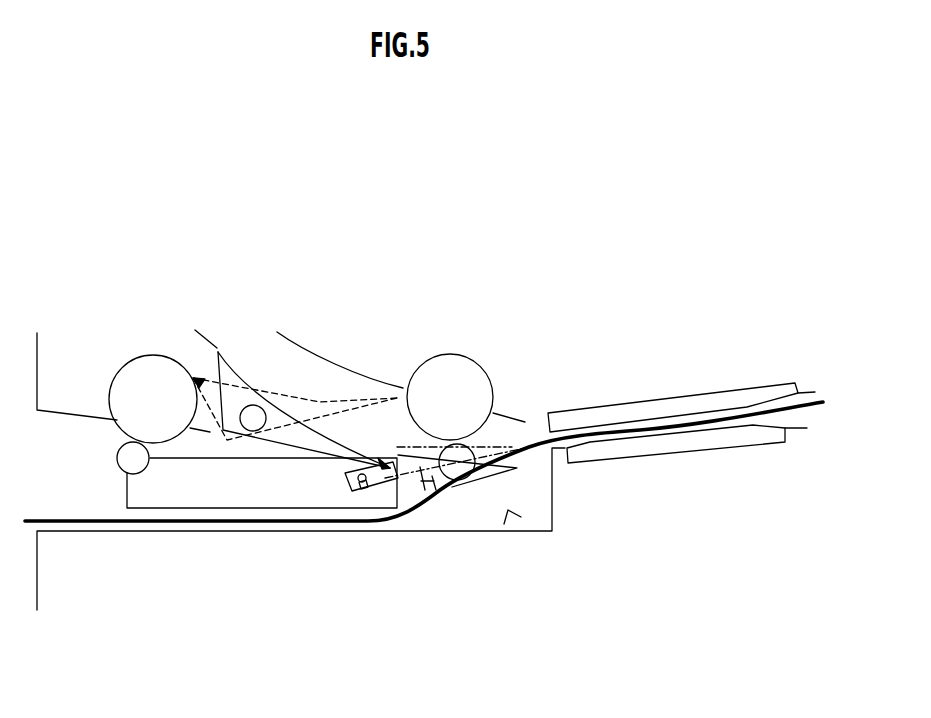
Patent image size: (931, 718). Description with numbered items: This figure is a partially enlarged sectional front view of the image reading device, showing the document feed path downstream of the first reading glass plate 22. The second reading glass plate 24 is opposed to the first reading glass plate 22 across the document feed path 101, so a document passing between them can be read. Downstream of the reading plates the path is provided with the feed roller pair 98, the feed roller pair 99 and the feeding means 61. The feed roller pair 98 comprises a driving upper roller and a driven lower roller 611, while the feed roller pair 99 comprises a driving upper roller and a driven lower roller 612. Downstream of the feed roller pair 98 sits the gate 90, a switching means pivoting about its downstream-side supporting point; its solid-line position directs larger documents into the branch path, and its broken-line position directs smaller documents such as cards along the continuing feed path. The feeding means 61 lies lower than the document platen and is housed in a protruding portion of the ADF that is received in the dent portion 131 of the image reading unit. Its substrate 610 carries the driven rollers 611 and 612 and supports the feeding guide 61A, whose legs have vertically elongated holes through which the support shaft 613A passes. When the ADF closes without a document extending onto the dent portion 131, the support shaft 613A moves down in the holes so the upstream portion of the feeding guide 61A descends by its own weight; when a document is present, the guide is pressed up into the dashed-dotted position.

The feed roller pair 99 is at (153, 390).
The feed roller pair 98 is at (450, 388).
The gate 90 is at (250, 395).
The driven roller 612 is at (135, 463).
The feeding means 61 is at (188, 483).
The document feed path 101 is at (233, 440).
The substrate 610 is at (322, 507).
The support shaft 613A is at (367, 491).
The feeding guide 61A is at (436, 490).
The driven roller 611 is at (464, 478).
The dent portion 131 is at (508, 510).
The second reading glass plate 24 is at (705, 403).
The first reading glass plate 22 is at (705, 440).